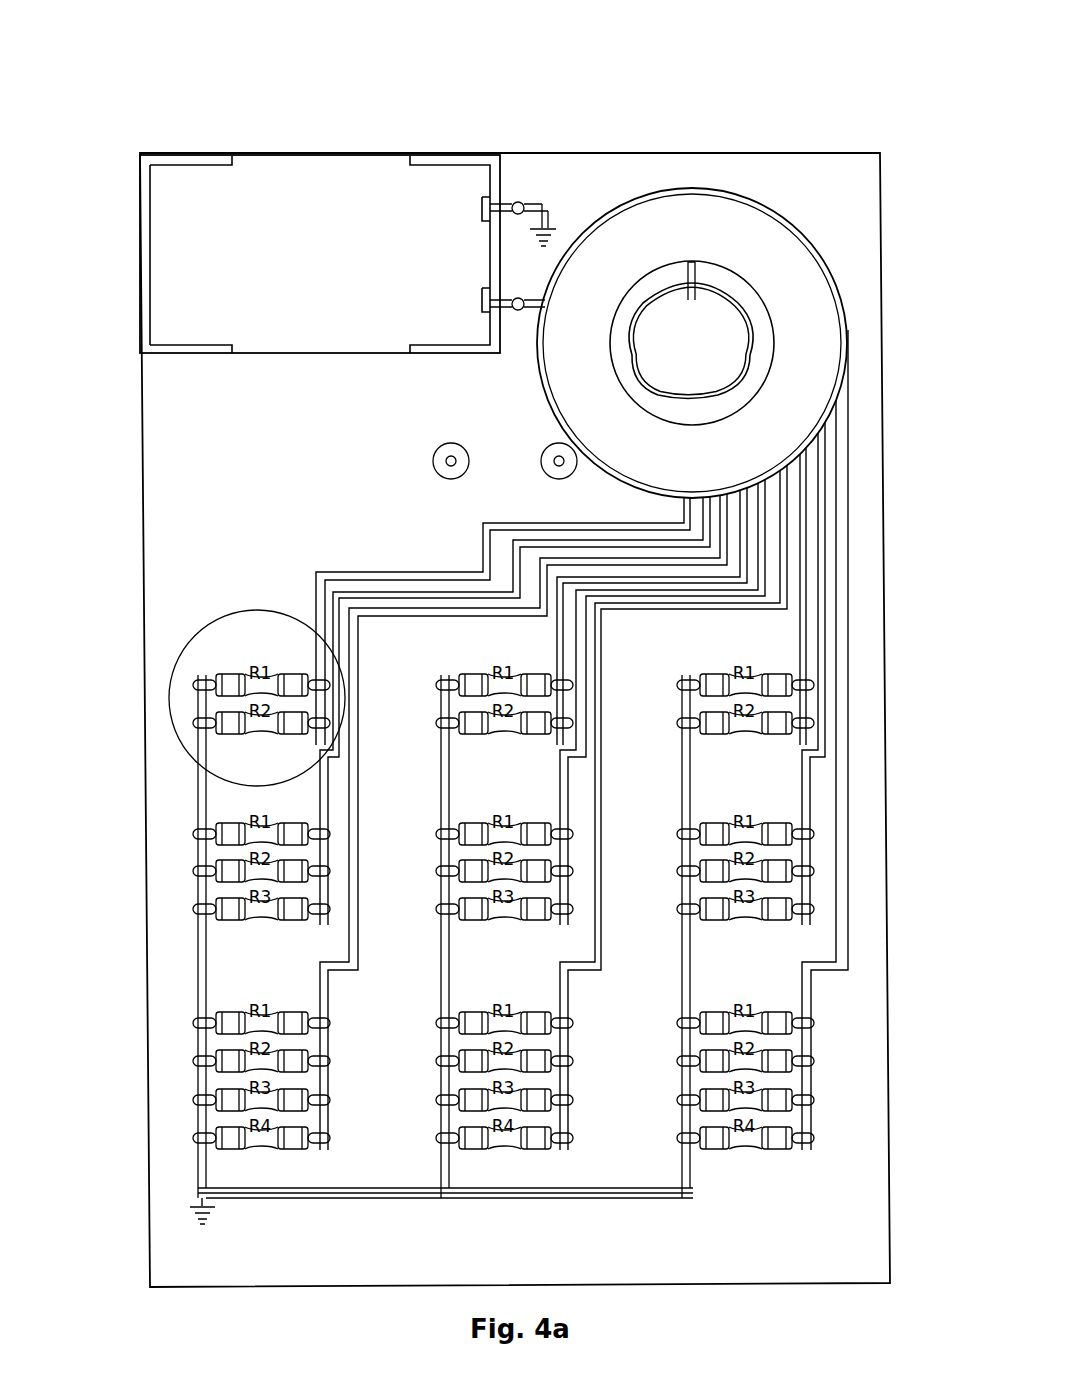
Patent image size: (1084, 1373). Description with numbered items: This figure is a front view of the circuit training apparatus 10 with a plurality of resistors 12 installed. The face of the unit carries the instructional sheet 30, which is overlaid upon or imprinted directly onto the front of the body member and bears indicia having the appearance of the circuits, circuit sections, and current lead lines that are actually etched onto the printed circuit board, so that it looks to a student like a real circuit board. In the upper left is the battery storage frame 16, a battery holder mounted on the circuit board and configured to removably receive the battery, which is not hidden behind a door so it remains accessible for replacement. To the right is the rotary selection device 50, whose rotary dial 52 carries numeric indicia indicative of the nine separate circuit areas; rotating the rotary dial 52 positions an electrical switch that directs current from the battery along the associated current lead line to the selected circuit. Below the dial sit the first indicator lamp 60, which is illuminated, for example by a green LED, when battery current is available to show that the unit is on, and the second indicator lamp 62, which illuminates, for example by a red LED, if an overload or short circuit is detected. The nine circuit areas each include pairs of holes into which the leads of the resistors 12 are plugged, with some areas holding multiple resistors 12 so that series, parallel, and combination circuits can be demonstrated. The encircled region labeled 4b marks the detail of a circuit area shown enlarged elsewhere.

The circuit training apparatus 10 is at (805, 76).
The resistor 12 is at (253, 725).
The battery storage frame 16 is at (258, 185).
The instructional sheet 30 is at (217, 452).
The rotary selection device 50 is at (852, 272).
The rotary dial 52 is at (715, 300).
The first indicator lamp 60 is at (441, 449).
The second indicator lamp 62 is at (549, 449).
The detail region of FIG. 4b is at (177, 660).